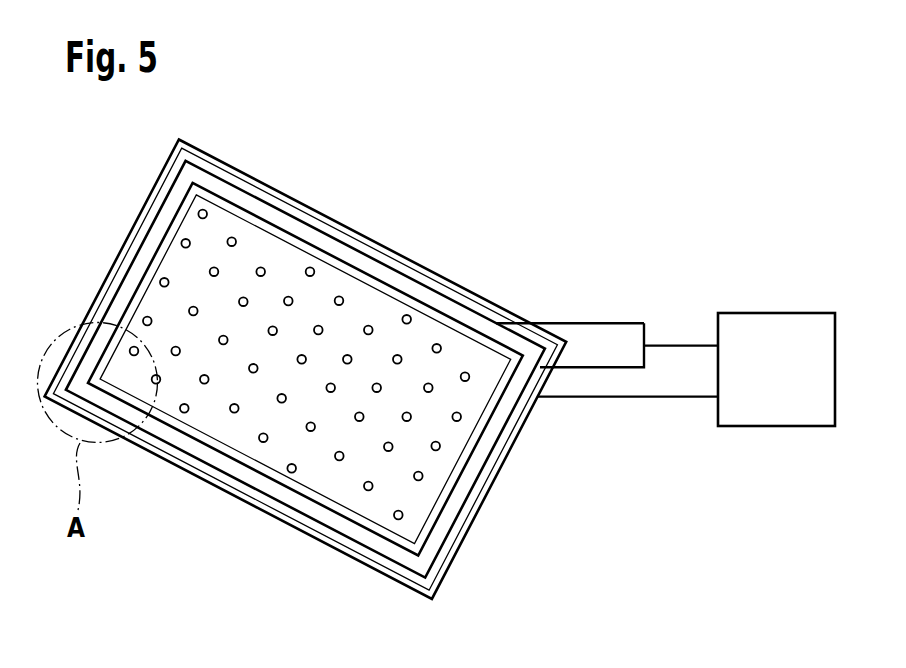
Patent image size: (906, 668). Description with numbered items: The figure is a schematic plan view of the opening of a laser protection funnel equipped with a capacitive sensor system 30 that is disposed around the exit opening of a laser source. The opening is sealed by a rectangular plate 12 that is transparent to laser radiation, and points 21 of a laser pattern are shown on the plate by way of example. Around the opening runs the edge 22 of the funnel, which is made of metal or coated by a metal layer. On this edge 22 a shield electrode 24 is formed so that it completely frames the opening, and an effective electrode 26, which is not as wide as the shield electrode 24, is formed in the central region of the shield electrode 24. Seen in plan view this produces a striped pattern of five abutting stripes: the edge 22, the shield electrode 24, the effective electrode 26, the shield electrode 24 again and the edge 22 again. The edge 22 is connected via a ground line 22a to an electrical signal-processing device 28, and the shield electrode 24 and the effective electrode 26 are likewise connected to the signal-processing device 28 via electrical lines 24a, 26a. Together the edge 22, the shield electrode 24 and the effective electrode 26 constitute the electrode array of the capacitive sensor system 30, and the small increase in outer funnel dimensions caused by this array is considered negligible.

The capacitive sensor system 30 is at (353, 207).
The edge 22 is at (176, 152).
The shield electrode 24 is at (155, 217).
The effective electrode 26 is at (135, 273).
The rectangular plate 12 is at (380, 312).
The points 21 is at (423, 475).
The electrical line 26a is at (573, 321).
The electrical line 24a is at (622, 365).
The electrical signal-processing device 28 is at (796, 382).
The ground line 22a is at (663, 400).